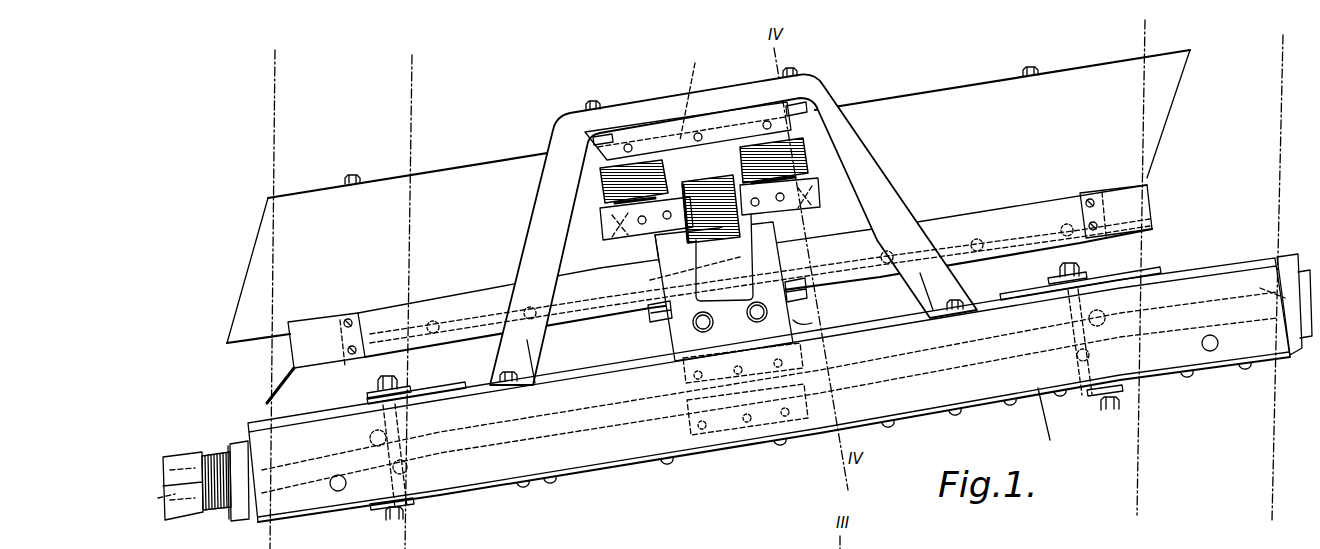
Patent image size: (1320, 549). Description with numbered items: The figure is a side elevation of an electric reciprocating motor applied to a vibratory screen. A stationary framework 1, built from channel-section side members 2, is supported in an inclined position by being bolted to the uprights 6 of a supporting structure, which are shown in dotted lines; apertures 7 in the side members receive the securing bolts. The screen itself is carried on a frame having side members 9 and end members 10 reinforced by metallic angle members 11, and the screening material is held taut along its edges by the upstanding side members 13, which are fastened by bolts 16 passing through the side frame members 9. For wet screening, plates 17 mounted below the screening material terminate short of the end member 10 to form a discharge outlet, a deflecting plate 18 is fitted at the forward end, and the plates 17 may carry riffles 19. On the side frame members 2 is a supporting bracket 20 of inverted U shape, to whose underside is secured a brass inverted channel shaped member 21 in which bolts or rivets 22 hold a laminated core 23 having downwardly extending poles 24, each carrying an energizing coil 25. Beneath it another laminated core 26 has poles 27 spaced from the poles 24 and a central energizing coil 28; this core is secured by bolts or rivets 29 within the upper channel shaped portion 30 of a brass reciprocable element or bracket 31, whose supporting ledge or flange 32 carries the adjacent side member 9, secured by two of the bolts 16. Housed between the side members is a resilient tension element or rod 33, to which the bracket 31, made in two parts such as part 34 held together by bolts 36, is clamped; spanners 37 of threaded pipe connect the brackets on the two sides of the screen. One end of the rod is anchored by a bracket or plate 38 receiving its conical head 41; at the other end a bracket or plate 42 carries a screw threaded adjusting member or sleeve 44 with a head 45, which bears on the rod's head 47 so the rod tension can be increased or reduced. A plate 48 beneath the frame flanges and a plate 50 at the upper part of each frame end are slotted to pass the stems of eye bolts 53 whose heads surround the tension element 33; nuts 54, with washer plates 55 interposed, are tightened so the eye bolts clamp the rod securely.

The stationary framework 1 is at (1048, 418).
The side members 2 is at (590, 465).
The uprights 6 is at (398, 152).
The apertures 7 is at (338, 492).
The side members of screen frame 9 is at (952, 225).
The end members of screen frame 10 is at (348, 310).
The metallic angle members 11 is at (302, 332).
The upstanding side members 13 is at (937, 80).
The bolts 16 is at (352, 175).
The plates 17 is at (482, 345).
The deflecting plate 18 is at (277, 383).
The riffles 19 is at (437, 330).
The supporting bracket 20 is at (537, 265).
The inverted channel shaped member 21 is at (638, 127).
The bolts or rivets 22 is at (699, 134).
The laminated core 23 is at (694, 92).
The poles 24 is at (610, 168).
The energizing coils 25 is at (610, 190).
The laminated core 26 is at (662, 253).
The poles 27 is at (603, 243).
The energizing coil 28 is at (697, 188).
The bolts or rivets 29 is at (758, 206).
The upper channel shaped portion 30 is at (748, 225).
The reciprocable element or bracket 31 is at (808, 324).
The supporting ledge or flange 32 is at (662, 272).
The tension element or rod 33 is at (580, 422).
The bracket part 34 is at (688, 350).
The bolts 36 is at (703, 448).
The spanners 37 is at (750, 316).
The bracket or plate 38 is at (1280, 267).
The conical head 41 is at (1262, 289).
The bracket or plate 42 is at (243, 440).
The screw threaded adjusting member or sleeve 44 is at (222, 508).
The head 45 is at (182, 458).
The head 47 is at (156, 503).
The plate 48 is at (487, 486).
The plate 50 is at (337, 412).
The eye bolts 53 is at (377, 453).
The nuts 54 is at (398, 378).
The washer plates 55 is at (412, 392).